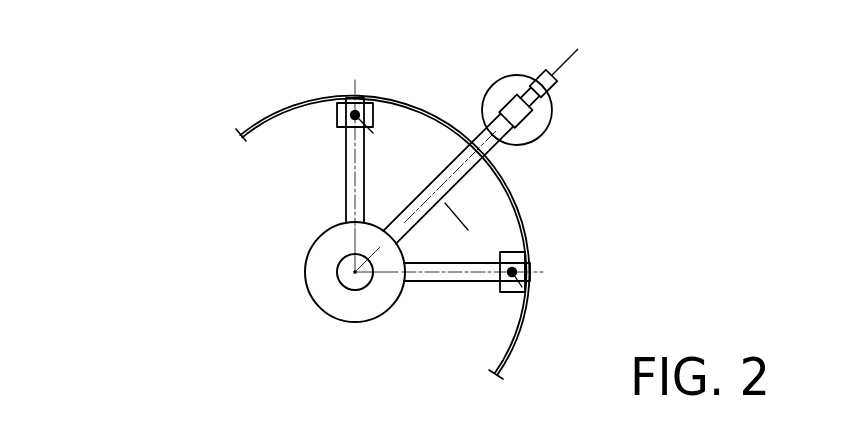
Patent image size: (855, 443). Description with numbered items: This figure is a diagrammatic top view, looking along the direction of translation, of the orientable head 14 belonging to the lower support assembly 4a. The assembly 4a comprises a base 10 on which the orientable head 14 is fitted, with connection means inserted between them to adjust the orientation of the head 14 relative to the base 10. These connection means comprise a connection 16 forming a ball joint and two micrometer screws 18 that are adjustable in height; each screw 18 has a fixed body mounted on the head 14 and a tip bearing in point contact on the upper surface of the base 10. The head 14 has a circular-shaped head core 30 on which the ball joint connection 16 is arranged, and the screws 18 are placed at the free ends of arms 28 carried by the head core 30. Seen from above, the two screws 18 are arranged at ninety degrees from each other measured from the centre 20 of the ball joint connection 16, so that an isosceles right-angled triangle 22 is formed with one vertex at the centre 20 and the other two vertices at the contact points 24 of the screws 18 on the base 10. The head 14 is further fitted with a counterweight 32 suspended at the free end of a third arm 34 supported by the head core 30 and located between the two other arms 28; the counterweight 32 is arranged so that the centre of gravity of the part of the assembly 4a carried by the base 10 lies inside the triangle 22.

The lower support assembly 4a is at (443, 51).
The base 10 is at (296, 122).
The orientable head 14 is at (337, 260).
The connection forming a ball joint 16 is at (346, 289).
The micrometer screws 18 is at (368, 104).
The centre of the ball joint connection 20 is at (352, 276).
The isosceles right-angled triangle 22 is at (397, 180).
The contact points 24 is at (355, 115).
The arms 28 is at (346, 175).
The head core 30 is at (325, 243).
The counterweight 32 is at (538, 129).
The arm 34 is at (458, 181).